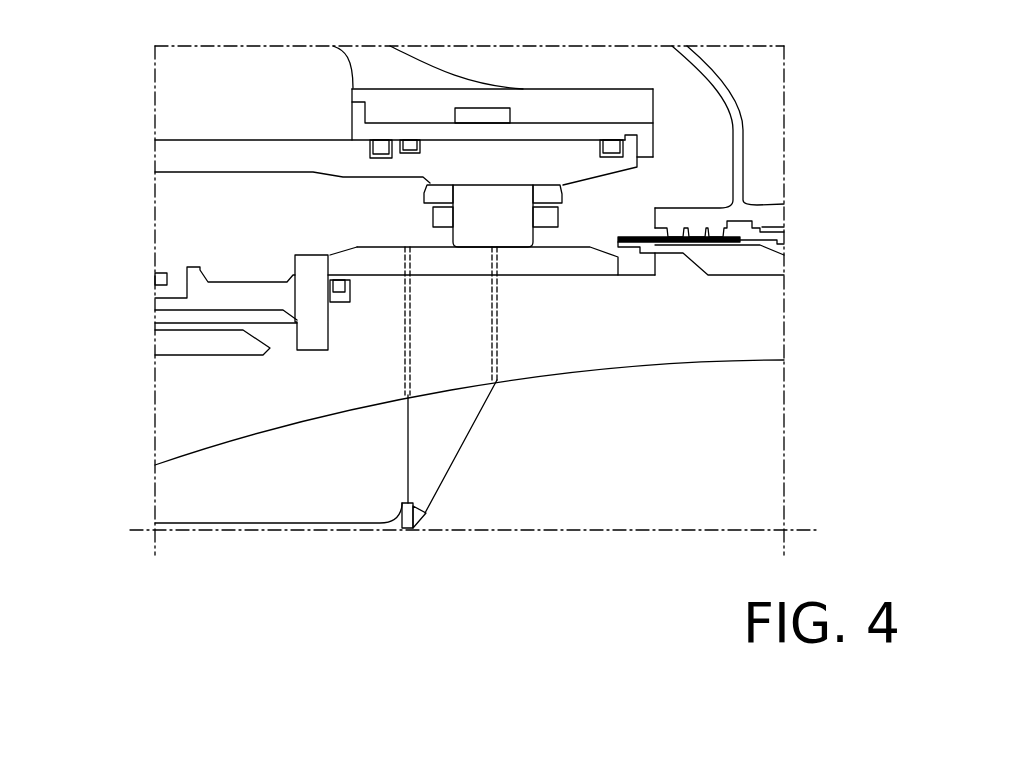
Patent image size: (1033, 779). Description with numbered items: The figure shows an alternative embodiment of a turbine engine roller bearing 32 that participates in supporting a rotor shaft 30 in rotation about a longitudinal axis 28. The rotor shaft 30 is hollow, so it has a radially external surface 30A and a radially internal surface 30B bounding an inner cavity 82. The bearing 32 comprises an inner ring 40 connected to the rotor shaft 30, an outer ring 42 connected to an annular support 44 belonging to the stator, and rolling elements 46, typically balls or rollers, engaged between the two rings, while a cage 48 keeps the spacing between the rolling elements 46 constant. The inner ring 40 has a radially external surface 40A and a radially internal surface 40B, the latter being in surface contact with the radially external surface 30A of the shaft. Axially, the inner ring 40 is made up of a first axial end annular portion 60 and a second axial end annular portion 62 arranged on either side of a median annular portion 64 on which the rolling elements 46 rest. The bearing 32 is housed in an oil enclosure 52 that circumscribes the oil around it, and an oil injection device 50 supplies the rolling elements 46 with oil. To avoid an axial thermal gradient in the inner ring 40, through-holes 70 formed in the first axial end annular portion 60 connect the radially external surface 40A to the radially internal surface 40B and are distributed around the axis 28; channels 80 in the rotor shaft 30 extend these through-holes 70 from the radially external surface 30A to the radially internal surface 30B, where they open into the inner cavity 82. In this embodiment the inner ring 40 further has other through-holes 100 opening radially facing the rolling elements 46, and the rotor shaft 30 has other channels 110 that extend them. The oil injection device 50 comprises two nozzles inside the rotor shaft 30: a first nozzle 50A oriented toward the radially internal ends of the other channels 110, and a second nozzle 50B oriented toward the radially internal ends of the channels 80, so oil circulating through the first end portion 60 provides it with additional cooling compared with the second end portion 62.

The longitudinal axis 28 is at (222, 532).
The rotor shaft 30 is at (653, 350).
The radially external surface 30A is at (510, 275).
The radially internal surface 30B is at (452, 393).
The roller bearing 32 is at (582, 203).
The inner ring 40 is at (622, 268).
The radially external surface 40A is at (472, 247).
The radially internal surface 40B is at (378, 267).
The outer ring 42 is at (575, 157).
The annular support 44 is at (532, 113).
The rolling elements 46 is at (515, 229).
The cage 48 is at (545, 218).
The oil injection device 50 is at (425, 519).
The first nozzle 50A is at (455, 495).
The second nozzle 50B is at (390, 528).
The oil enclosure 52 is at (328, 239).
The first axial end annular portion 60 is at (367, 278).
The second axial end annular portion 62 is at (557, 265).
The median annular portion 64 is at (447, 260).
The through-holes 70 is at (413, 255).
The channels 80 is at (405, 335).
The inner cavity 82 is at (577, 502).
The other through-holes 100 is at (490, 255).
The other channels 110 is at (498, 318).